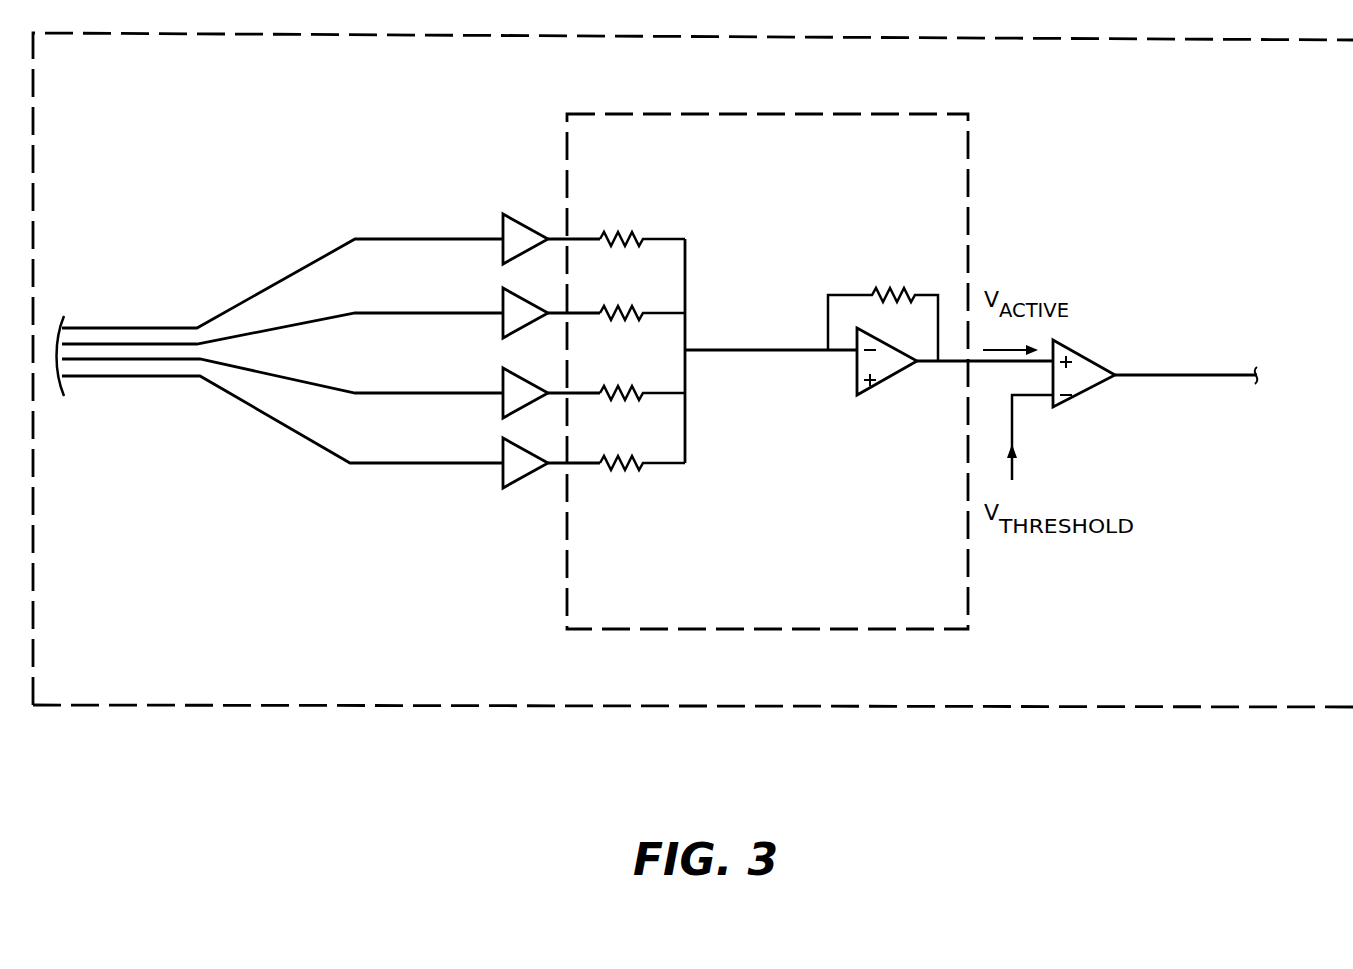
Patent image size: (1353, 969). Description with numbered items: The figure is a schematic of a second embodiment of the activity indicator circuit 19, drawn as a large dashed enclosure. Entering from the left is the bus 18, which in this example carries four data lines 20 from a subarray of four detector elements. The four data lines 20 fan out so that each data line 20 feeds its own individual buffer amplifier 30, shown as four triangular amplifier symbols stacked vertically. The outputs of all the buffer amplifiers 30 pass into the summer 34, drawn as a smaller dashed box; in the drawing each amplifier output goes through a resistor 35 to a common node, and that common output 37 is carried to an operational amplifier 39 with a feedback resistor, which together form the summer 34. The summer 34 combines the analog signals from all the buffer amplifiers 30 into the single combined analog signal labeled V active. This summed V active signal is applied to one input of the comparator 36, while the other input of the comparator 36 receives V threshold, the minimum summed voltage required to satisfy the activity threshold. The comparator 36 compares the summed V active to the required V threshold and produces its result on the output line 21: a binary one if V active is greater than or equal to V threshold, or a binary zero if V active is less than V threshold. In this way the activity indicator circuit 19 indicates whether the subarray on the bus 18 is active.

The bus 18 is at (144, 322).
The data line 20 is at (125, 379).
The buffer amplifier 30 is at (521, 222).
The summing resistors 35 is at (612, 232).
The summer output node 37 is at (688, 349).
The operational amplifier 39 is at (838, 389).
The summer 34 is at (834, 608).
The comparator 36 is at (1093, 354).
The output line 21 is at (1193, 373).
The activity indicator circuit 19 is at (962, 688).